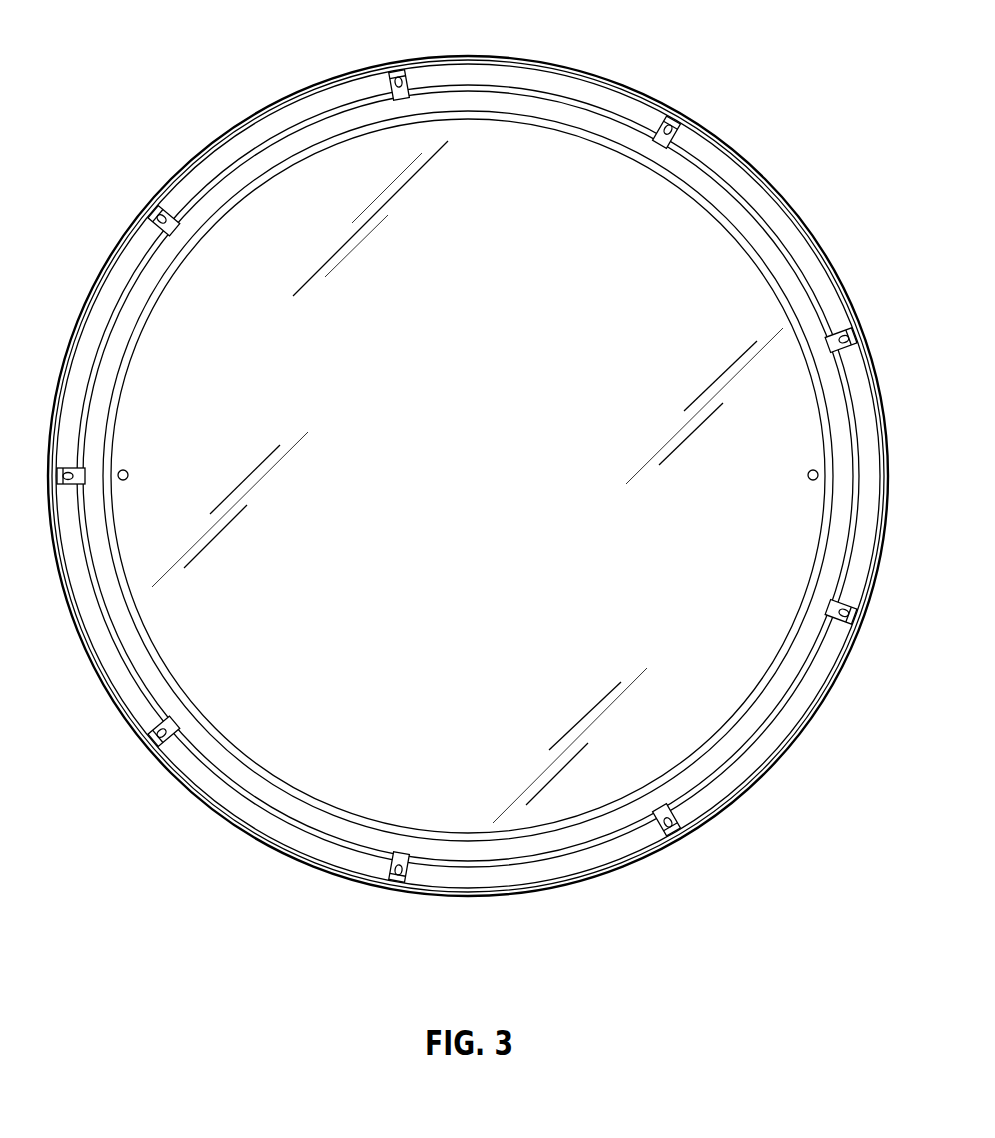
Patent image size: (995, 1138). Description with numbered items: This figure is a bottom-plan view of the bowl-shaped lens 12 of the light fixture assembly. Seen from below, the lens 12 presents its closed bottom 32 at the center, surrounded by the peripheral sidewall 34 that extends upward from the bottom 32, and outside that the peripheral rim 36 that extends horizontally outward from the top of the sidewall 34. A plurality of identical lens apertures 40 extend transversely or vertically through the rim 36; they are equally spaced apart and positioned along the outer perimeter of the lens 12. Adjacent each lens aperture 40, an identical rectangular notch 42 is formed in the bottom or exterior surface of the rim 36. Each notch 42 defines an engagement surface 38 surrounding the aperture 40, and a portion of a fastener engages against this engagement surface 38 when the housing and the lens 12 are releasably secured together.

The bowl-shaped lens 12 is at (130, 50).
The closed bottom 32 is at (485, 488).
The peripheral sidewall 34 is at (97, 521).
The peripheral rim 36 is at (122, 672).
The engagement surface 38 is at (171, 737).
The lens aperture 40 is at (398, 883).
The rectangular notch 42 is at (662, 823).